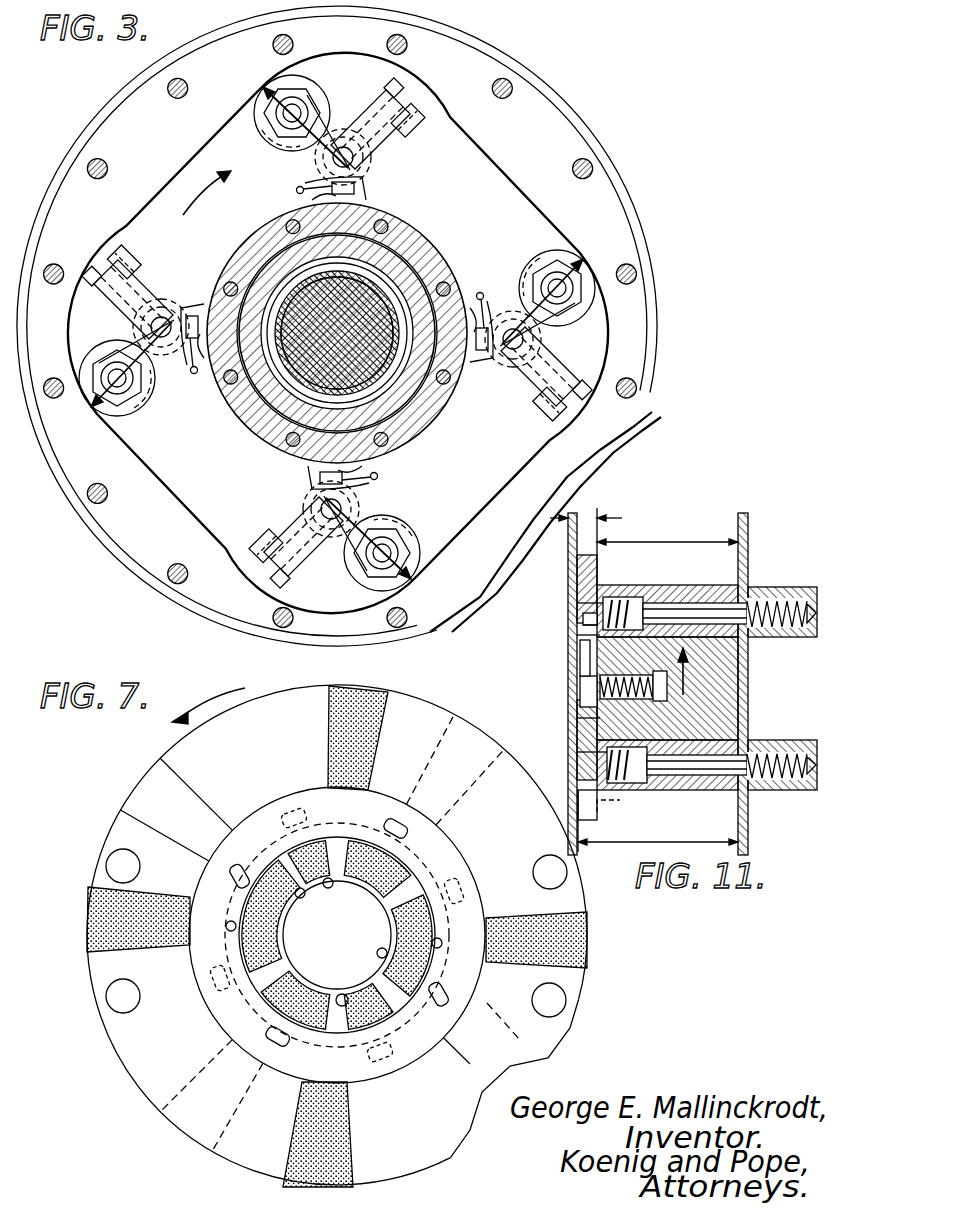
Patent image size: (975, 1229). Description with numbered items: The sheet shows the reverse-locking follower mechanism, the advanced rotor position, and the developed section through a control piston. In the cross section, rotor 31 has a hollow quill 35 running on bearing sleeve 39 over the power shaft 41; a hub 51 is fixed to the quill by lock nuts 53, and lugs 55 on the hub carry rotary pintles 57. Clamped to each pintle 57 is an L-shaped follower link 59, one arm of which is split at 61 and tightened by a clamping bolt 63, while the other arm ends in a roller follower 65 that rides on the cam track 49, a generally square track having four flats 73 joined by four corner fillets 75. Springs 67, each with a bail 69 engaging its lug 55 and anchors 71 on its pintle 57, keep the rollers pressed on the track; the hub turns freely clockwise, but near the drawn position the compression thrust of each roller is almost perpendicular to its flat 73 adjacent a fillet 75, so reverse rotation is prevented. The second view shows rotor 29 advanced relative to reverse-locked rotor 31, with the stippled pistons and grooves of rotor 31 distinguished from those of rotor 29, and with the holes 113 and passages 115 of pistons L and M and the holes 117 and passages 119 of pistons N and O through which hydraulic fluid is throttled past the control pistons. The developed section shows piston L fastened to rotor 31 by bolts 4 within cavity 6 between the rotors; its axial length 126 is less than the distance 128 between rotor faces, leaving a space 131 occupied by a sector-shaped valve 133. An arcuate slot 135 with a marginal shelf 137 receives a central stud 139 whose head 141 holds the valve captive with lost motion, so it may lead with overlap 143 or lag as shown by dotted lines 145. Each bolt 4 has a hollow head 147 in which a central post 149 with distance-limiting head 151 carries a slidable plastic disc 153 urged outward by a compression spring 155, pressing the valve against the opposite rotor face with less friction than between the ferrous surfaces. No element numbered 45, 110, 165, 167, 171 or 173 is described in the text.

In FIG. 3, the housing outer rim 45 is at (538, 98).
In FIG. 3, the cam track 49 is at (455, 60).
In FIG. 3, the corner fillet 75 is at (345, 55).
In FIG. 3, the flat 73 is at (163, 180).
In FIG. 3, the hub 51 is at (405, 222).
In FIG. 3, the lock nut 53 is at (392, 268).
In FIG. 3, the bearing sleeve 39 is at (392, 298).
In FIG. 3, the power shaft 41 is at (345, 323).
In FIG. 3, the hollow quill 35 is at (392, 356).
In FIG. 3, the lug 55 is at (368, 190).
In FIG. 3, the pintle 57 is at (358, 150).
In FIG. 3, the follower link 59 is at (290, 150).
In FIG. 3, the split 61 is at (405, 120).
In FIG. 3, the clamping bolt 63 is at (388, 80).
In FIG. 3, the roller follower 65 is at (262, 128).
In FIG. 3, the spring 67 is at (312, 184).
In FIG. 3, the bail 69 is at (297, 192).
In FIG. 3, the anchor 71 is at (360, 190).
In FIG. 7, the rotor 31 is at (286, 792).
In FIG. 11, the rotor 31 is at (745, 648).
In FIG. 7, the ring member 110 is at (212, 868).
In FIG. 7, the hole 113 is at (365, 828).
In FIG. 7, the passage 115 is at (328, 826).
In FIG. 7, the hole 117 is at (245, 880).
In FIG. 7, the passage 119 is at (265, 858).
In FIG. 7, the valve 133 is at (310, 815).
In FIG. 11, the valve 133 is at (572, 583).
In FIG. 7, the bore 165 is at (388, 928).
In FIG. 7, the pin 167 is at (342, 994).
In FIG. 7, the pin 171 is at (346, 920).
In FIG. 7, the slot 173 is at (285, 958).
In FIG. 11, the bolt 4 is at (690, 605).
In FIG. 11, the cavity 6 is at (662, 522).
In FIG. 11, the rotor 29 is at (583, 626).
In FIG. 11, the axial length 126 is at (667, 535).
In FIG. 11, the distance 128 is at (658, 821).
In FIG. 11, the distance 131 is at (585, 518).
In FIG. 11, the arcuate slot 135 is at (585, 655).
In FIG. 11, the marginal shelf 137 is at (583, 618).
In FIG. 11, the central stud 139 is at (628, 676).
In FIG. 11, the head 141 is at (582, 690).
In FIG. 11, the overlap 143 is at (592, 570).
In FIG. 11, the dotted lines 145 is at (605, 805).
In FIG. 11, the hollow head 147 is at (660, 792).
In FIG. 11, the central post 149 is at (645, 600).
In FIG. 11, the distance-limiting head 151 is at (578, 604).
In FIG. 11, the disc 153 is at (580, 636).
In FIG. 11, the compression spring 155 is at (612, 597).